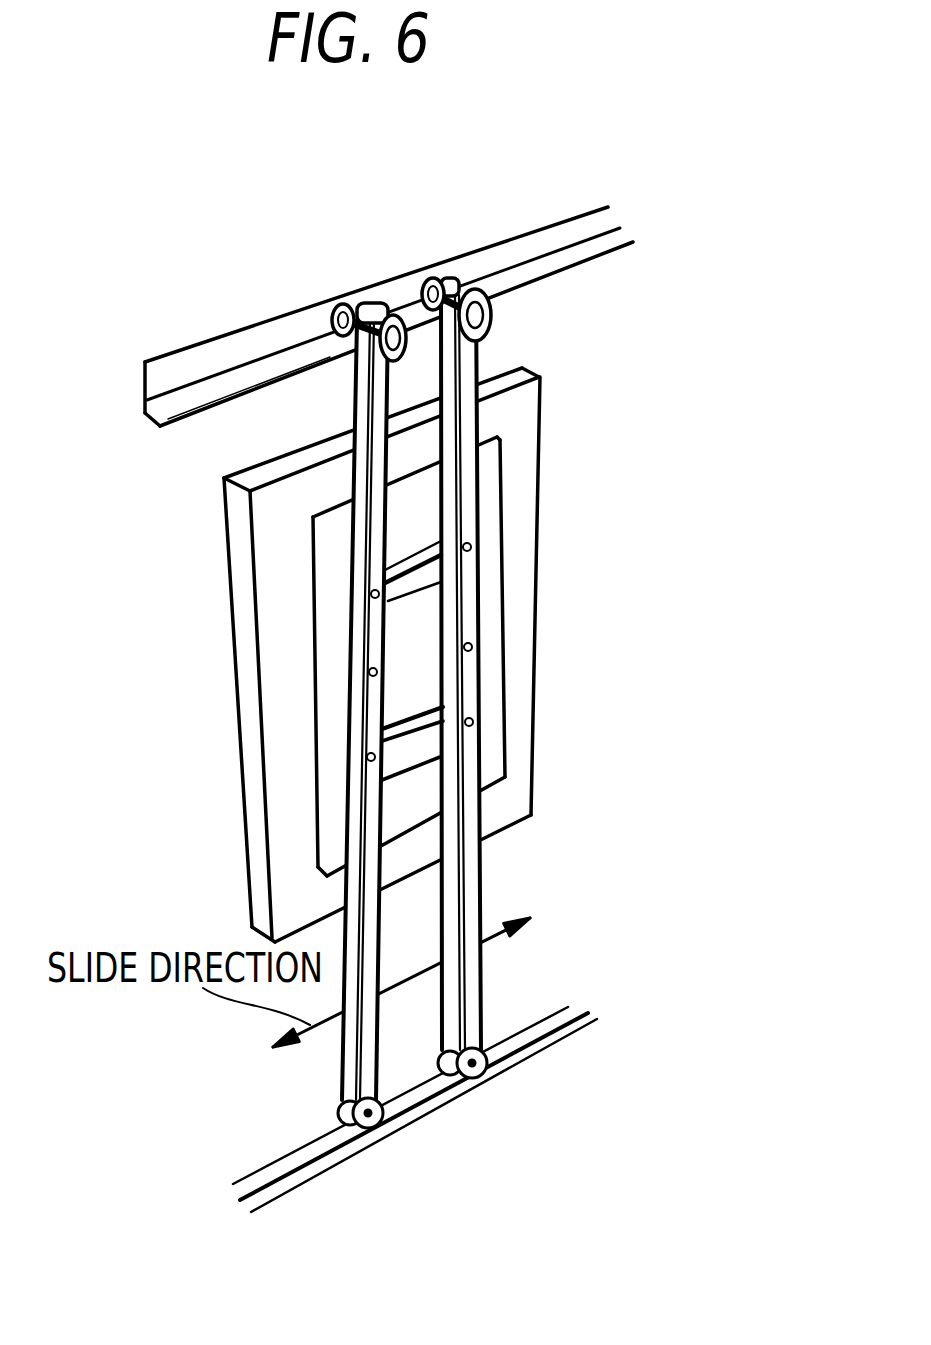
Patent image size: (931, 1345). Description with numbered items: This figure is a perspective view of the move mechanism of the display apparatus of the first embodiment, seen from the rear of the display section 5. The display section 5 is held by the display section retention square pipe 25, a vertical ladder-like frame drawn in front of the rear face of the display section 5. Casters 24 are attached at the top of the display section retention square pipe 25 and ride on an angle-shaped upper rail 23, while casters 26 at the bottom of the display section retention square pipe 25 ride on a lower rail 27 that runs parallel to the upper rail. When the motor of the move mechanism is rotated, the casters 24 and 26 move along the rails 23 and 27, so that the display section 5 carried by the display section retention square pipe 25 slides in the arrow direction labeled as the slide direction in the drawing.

The display section 5 is at (540, 603).
The rail 23 is at (303, 310).
The caster 24 is at (443, 268).
The display section retention square pipe 25 is at (483, 870).
The caster 26 is at (500, 1067).
The rail 27 is at (327, 1163).